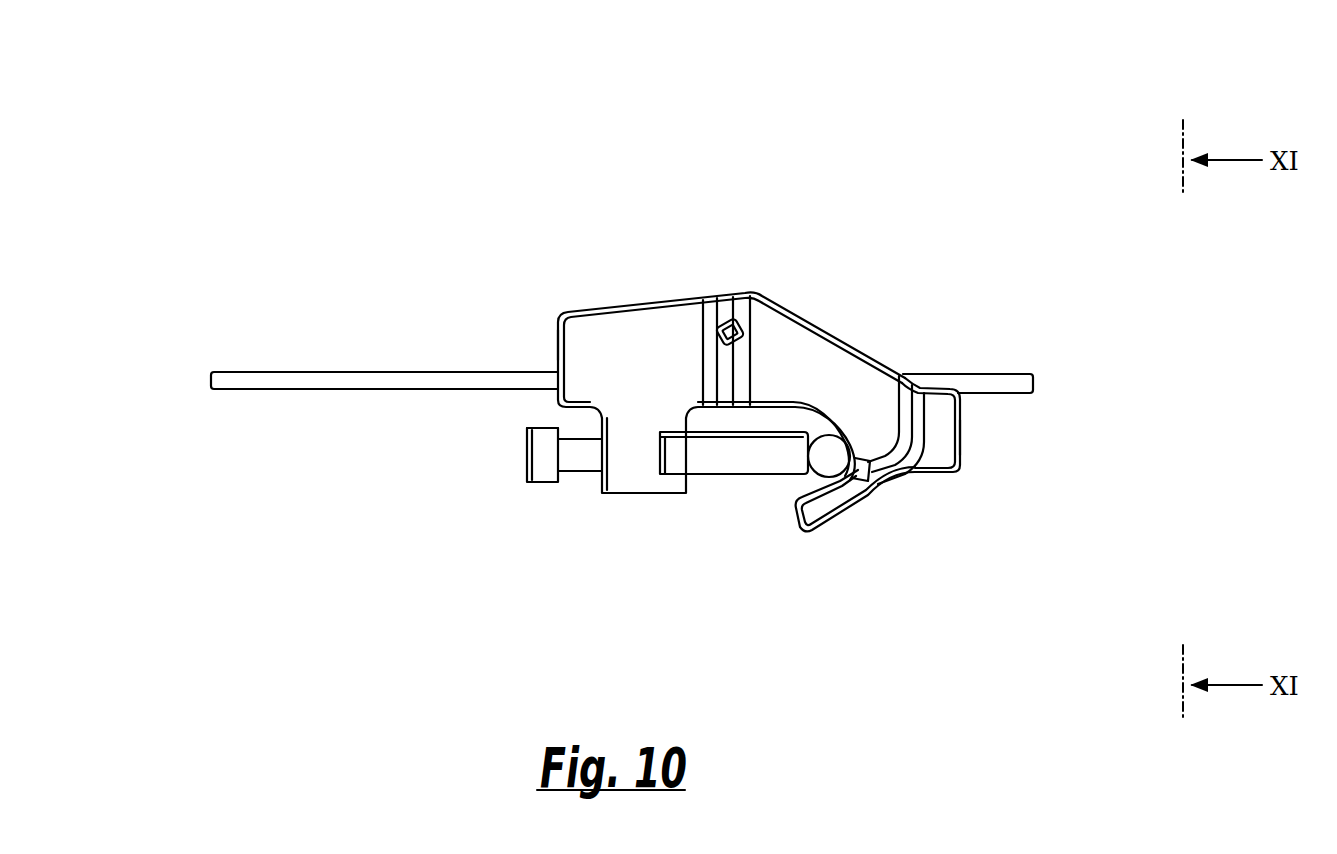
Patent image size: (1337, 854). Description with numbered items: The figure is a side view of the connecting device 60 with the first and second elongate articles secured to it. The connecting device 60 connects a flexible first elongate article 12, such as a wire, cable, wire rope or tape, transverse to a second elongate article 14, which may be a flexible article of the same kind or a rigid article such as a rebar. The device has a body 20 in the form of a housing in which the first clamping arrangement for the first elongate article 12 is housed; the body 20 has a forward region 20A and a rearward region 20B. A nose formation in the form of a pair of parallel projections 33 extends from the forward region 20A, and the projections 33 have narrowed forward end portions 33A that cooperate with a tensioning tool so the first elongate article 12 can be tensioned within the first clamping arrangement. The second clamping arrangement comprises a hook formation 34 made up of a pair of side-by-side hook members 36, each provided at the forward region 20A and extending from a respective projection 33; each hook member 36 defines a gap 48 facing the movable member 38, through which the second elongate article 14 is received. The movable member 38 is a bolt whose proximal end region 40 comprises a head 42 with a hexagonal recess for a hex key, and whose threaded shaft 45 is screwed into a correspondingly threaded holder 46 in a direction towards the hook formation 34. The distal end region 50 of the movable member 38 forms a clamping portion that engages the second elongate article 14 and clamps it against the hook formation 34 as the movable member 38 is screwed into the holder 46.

The first elongate article 12 is at (289, 384).
The second elongate article 14 is at (827, 460).
The body 20 is at (681, 318).
The forward region 20A is at (748, 323).
The rearward region 20B is at (556, 315).
The projections 33 is at (864, 374).
The narrowed forward end portions 33A is at (963, 445).
The hook formation 34 is at (812, 538).
The hook members 36 is at (827, 512).
The movable member 38 is at (524, 450).
The proximal end region 40 is at (524, 427).
The head 42 is at (540, 463).
The threaded shaft 45 is at (583, 462).
The holder 46 is at (637, 473).
The gap 48 is at (800, 488).
The distal end region 50 is at (787, 445).
The connecting device 60 is at (605, 268).